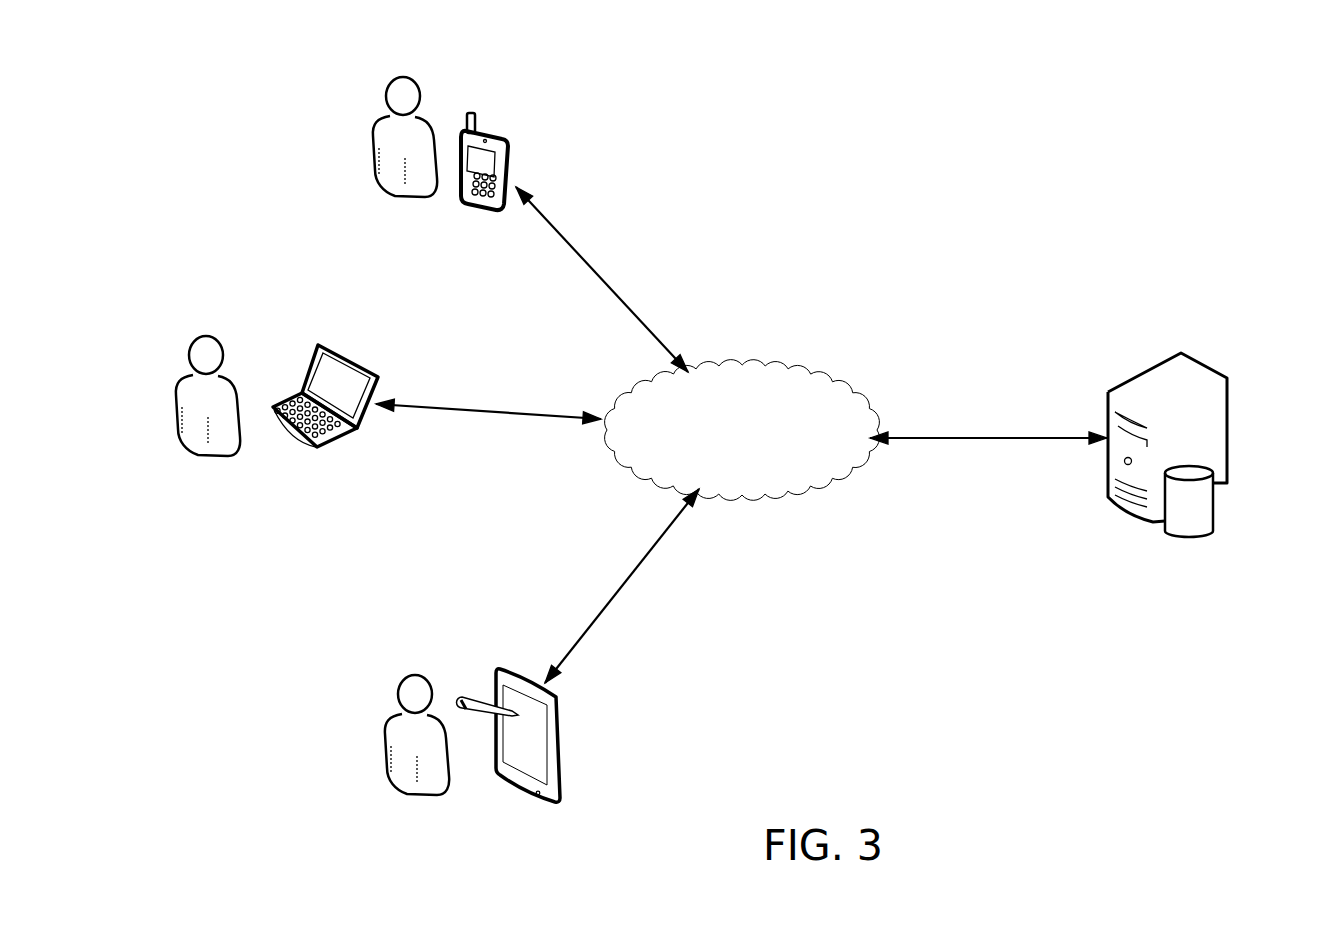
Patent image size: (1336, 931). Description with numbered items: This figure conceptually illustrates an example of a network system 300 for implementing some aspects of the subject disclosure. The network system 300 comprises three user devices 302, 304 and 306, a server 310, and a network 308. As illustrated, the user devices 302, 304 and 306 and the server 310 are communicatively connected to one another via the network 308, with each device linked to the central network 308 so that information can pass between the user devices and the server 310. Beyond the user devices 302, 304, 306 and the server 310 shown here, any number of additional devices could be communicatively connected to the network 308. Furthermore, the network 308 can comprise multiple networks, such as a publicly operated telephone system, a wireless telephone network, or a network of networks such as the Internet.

The network system 300 is at (785, 48).
The user device 302 is at (501, 132).
The user device 304 is at (378, 380).
The user device 306 is at (505, 665).
The network 308 is at (800, 366).
The server 310 is at (1205, 360).